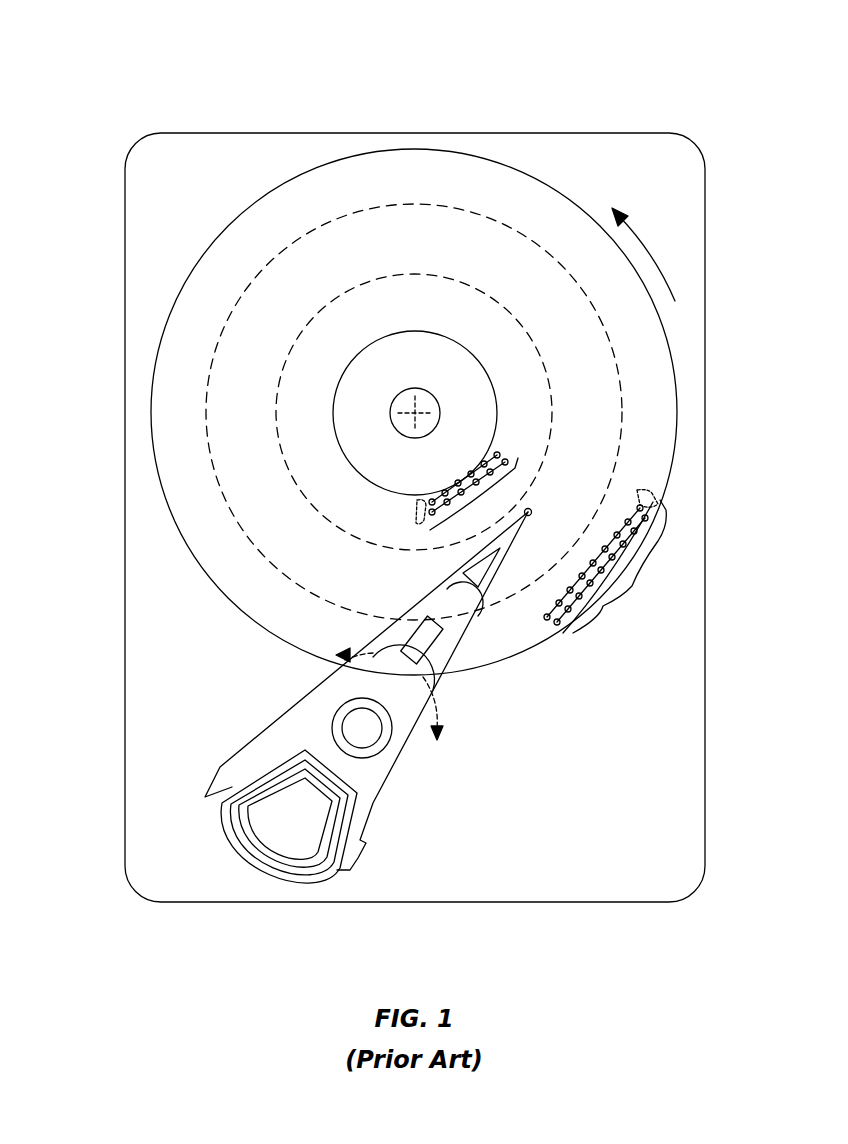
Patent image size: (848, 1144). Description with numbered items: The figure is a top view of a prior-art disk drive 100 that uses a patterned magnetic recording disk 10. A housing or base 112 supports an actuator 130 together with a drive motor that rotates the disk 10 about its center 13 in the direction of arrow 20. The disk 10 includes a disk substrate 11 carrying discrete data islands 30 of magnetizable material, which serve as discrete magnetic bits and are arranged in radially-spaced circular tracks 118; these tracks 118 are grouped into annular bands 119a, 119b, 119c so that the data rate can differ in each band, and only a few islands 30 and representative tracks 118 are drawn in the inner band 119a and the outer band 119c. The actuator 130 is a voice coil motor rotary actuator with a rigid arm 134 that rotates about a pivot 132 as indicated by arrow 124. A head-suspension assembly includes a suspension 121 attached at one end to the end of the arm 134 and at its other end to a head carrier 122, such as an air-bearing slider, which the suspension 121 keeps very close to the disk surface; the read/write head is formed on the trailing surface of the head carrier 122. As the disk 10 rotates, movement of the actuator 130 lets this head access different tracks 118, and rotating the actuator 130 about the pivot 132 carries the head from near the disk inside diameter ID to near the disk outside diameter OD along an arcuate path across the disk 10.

The disk drive 100 is at (126, 62).
The housing or base 112 is at (633, 133).
The disk substrate 11 is at (668, 333).
The patterned magnetic recording disk 10 is at (291, 207).
The disk outside diameter OD is at (221, 234).
The disk inside diameter ID is at (358, 469).
The inner annular band 119a is at (438, 284).
The annular band 119b is at (456, 219).
The outer annular band 119c is at (542, 194).
The disk center 13 is at (418, 407).
The arrow indicating disk rotation direction 20 is at (645, 238).
The circular data tracks 118 is at (417, 512).
The discrete data islands 30 is at (483, 503).
The head carrier 122 is at (531, 514).
The suspension 121 is at (460, 585).
The rigid arm 134 is at (419, 621).
The pivot 132 is at (352, 723).
The arrow indicating actuator rotation 124 is at (438, 713).
The actuator 130 is at (208, 790).